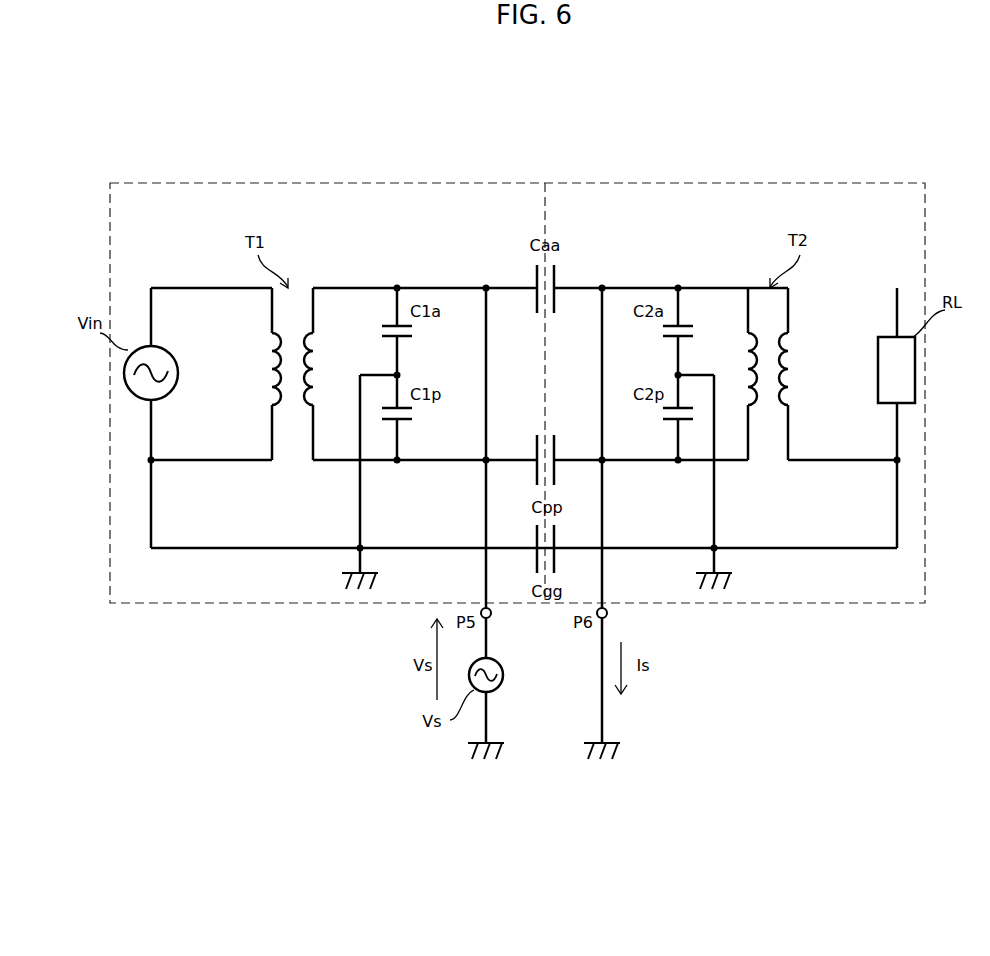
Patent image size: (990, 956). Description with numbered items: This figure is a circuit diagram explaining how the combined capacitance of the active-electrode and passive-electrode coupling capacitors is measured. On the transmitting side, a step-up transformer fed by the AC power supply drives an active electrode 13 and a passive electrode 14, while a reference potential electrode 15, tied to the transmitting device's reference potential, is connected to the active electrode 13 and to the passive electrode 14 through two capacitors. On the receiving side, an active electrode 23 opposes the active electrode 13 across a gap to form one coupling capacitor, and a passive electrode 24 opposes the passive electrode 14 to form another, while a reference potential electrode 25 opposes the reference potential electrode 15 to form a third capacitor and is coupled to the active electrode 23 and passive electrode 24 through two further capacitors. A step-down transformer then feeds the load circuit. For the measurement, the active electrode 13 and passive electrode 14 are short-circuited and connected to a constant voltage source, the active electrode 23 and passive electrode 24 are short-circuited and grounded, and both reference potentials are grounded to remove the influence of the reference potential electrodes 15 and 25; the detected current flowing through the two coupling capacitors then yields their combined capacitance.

The active electrode 13 is at (535, 268).
The active electrode 23 is at (556, 268).
The passive electrode 14 is at (535, 476).
The passive electrode 24 is at (556, 476).
The reference potential electrode 15 is at (535, 566).
The reference potential electrode 25 is at (556, 566).